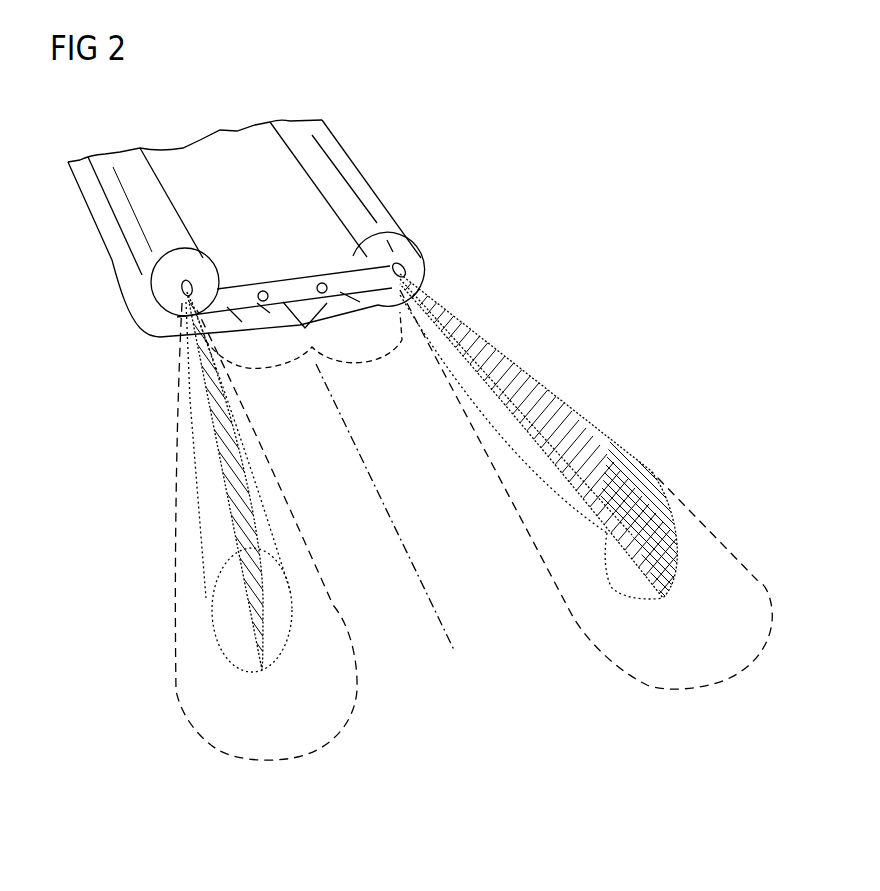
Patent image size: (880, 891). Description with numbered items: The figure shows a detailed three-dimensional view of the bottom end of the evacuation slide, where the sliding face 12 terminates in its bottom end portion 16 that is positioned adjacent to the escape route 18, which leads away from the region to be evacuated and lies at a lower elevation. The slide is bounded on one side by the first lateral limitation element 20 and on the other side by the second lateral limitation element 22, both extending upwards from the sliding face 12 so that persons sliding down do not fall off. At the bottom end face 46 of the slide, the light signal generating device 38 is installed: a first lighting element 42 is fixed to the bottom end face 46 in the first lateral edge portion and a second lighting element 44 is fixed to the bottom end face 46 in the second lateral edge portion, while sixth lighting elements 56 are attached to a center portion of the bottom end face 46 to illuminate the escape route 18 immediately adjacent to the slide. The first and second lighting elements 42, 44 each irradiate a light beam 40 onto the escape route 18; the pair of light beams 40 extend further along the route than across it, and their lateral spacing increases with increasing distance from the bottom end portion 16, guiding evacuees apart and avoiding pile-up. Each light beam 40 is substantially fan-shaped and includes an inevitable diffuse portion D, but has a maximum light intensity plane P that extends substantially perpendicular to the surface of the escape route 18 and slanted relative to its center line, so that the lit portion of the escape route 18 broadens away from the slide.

The sliding face 12 is at (231, 162).
The light signal generating device 38 is at (354, 122).
The second lateral limitation element 22 is at (352, 178).
The first lateral limitation element 20 is at (112, 211).
The bottom end portion 16 is at (466, 250).
The first lighting element 42 is at (180, 287).
The second lighting element 44 is at (420, 274).
The bottom end face 46 is at (229, 290).
The sixth lighting elements 56 is at (318, 283).
The escape route 18 is at (435, 648).
The light beam 40 is at (220, 513).
The maximum light intensity plane P is at (240, 500).
The diffuse portion D is at (322, 720).